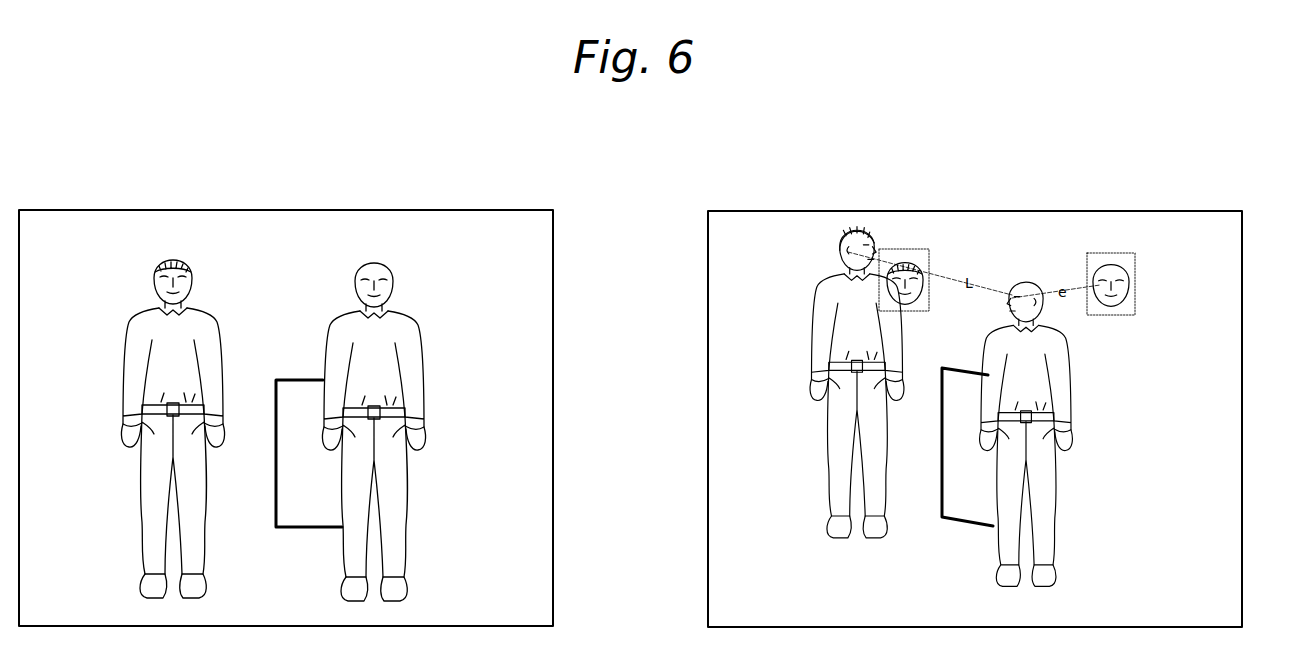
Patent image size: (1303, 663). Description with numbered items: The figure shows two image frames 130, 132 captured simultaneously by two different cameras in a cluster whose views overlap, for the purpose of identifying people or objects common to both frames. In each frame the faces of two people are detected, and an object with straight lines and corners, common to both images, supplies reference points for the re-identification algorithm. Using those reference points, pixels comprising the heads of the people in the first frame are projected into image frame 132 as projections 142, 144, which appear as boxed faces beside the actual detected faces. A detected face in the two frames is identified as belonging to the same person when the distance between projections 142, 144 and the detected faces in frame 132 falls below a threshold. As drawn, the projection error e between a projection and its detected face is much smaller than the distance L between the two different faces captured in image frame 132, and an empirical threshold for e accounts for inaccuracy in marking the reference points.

The image frame 130 is at (513, 209).
The image frame 132 is at (1205, 210).
The projection 142 is at (930, 258).
The projection 144 is at (1137, 268).